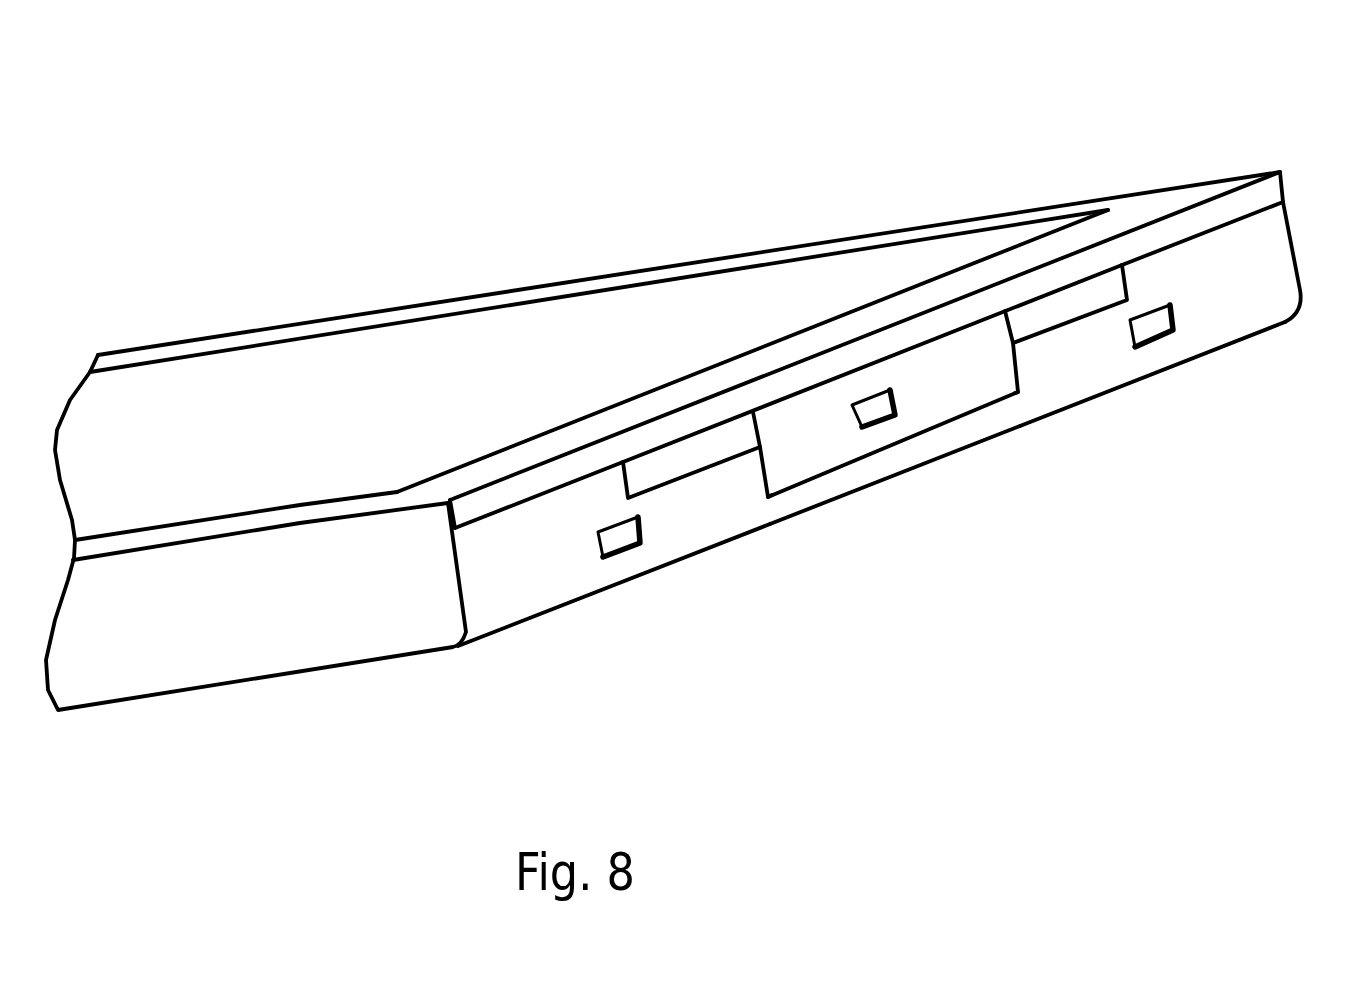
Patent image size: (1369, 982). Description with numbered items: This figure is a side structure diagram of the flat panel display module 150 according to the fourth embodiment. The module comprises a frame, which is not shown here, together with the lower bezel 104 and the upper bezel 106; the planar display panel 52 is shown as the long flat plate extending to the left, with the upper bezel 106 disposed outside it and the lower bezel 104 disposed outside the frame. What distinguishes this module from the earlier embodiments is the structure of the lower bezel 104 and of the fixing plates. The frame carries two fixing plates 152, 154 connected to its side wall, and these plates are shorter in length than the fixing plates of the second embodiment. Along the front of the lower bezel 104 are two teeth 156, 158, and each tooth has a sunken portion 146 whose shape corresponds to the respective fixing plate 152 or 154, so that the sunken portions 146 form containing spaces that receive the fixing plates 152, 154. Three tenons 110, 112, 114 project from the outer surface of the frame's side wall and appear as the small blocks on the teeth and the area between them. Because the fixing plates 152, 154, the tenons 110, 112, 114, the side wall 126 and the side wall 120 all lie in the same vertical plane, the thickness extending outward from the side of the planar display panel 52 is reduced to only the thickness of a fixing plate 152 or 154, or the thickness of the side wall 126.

The flat panel display module 150 is at (430, 112).
The planar display panel 52 is at (327, 378).
The lower bezel 104 is at (467, 652).
The upper bezel 106 is at (1173, 200).
The side wall 126 is at (1233, 210).
The tooth 156 is at (513, 535).
The tooth 158 is at (1190, 265).
The side wall 120 is at (1273, 295).
The fixing plate 152 is at (732, 438).
The fixing plate 154 is at (1110, 293).
The sunken portion 146 is at (687, 487).
The tenon 110 is at (611, 548).
The tenon 112 is at (880, 427).
The tenon 114 is at (1165, 340).